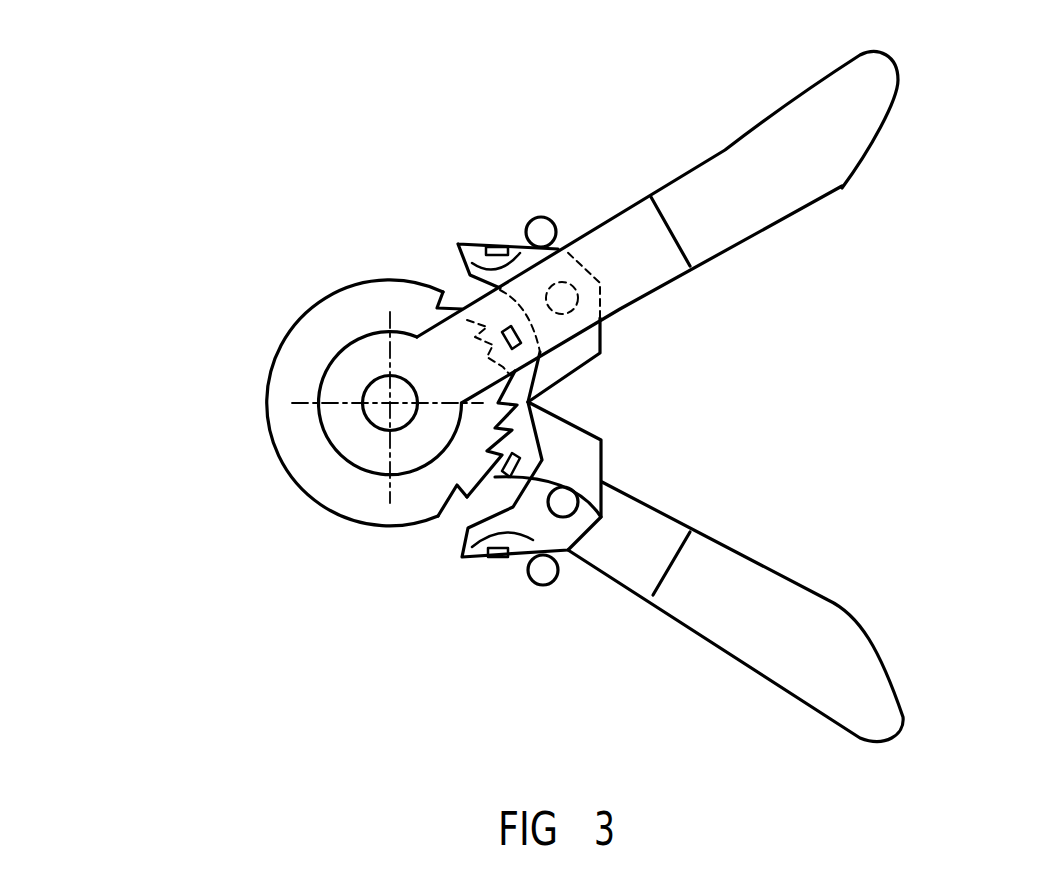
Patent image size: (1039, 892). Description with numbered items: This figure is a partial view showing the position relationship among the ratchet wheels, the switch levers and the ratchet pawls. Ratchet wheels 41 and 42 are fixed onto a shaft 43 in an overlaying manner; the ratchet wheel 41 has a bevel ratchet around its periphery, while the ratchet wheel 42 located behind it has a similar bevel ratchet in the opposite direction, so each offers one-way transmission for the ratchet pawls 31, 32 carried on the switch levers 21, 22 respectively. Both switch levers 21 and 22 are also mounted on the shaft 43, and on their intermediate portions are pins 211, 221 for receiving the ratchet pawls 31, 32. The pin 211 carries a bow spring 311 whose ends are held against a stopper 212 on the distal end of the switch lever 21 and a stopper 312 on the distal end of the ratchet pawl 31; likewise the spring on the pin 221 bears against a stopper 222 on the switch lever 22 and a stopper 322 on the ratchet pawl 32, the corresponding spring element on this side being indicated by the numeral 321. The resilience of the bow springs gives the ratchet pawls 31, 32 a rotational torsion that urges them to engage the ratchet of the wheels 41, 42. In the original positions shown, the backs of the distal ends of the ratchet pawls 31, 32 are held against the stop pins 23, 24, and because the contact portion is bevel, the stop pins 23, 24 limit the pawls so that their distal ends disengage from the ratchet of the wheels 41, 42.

The switch lever 21 is at (848, 663).
The switch lever 22 is at (838, 155).
The stop pin 23 is at (545, 572).
The stop pin 24 is at (543, 218).
The ratchet pawl 31 is at (603, 467).
The ratchet pawl 32 is at (600, 350).
The ratchet wheel 41 is at (314, 378).
The ratchet wheel 42 is at (317, 333).
The shaft 43 is at (385, 408).
The pin 211 is at (567, 508).
The stopper 212 is at (518, 453).
The pin 221 is at (578, 298).
The stopper 222 is at (521, 341).
The bow spring 311 is at (470, 538).
The stopper 312 is at (497, 558).
The upper jaw insert 321 is at (458, 249).
The stopper 322 is at (495, 246).